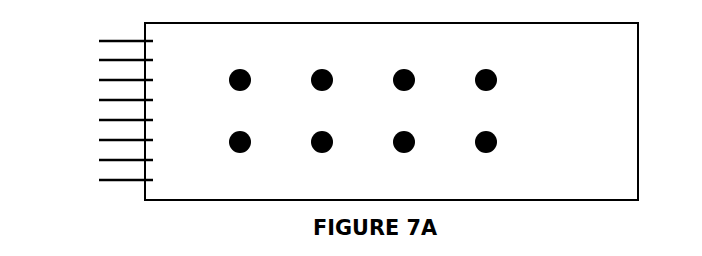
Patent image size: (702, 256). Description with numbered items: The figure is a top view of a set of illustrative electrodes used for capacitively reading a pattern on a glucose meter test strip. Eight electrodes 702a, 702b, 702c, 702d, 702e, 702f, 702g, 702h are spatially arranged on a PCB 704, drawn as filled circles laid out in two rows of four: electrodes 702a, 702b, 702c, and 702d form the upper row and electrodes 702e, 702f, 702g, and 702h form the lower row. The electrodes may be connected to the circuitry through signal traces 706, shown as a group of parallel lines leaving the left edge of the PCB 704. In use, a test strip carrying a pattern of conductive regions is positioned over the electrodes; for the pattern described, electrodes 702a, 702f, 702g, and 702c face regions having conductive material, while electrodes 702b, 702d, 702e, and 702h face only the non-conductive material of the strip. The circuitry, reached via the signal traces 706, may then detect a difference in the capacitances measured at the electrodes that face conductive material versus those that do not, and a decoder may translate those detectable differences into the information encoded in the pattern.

The electrode 702a is at (241, 67).
The electrode 702b is at (325, 67).
The electrode 702c is at (408, 67).
The electrode 702d is at (491, 67).
The electrode 702e is at (241, 129).
The electrode 702f is at (324, 129).
The electrode 702g is at (408, 129).
The electrode 702h is at (491, 129).
The PCB 704 is at (391, 111).
The signal traces 706 is at (93, 15).